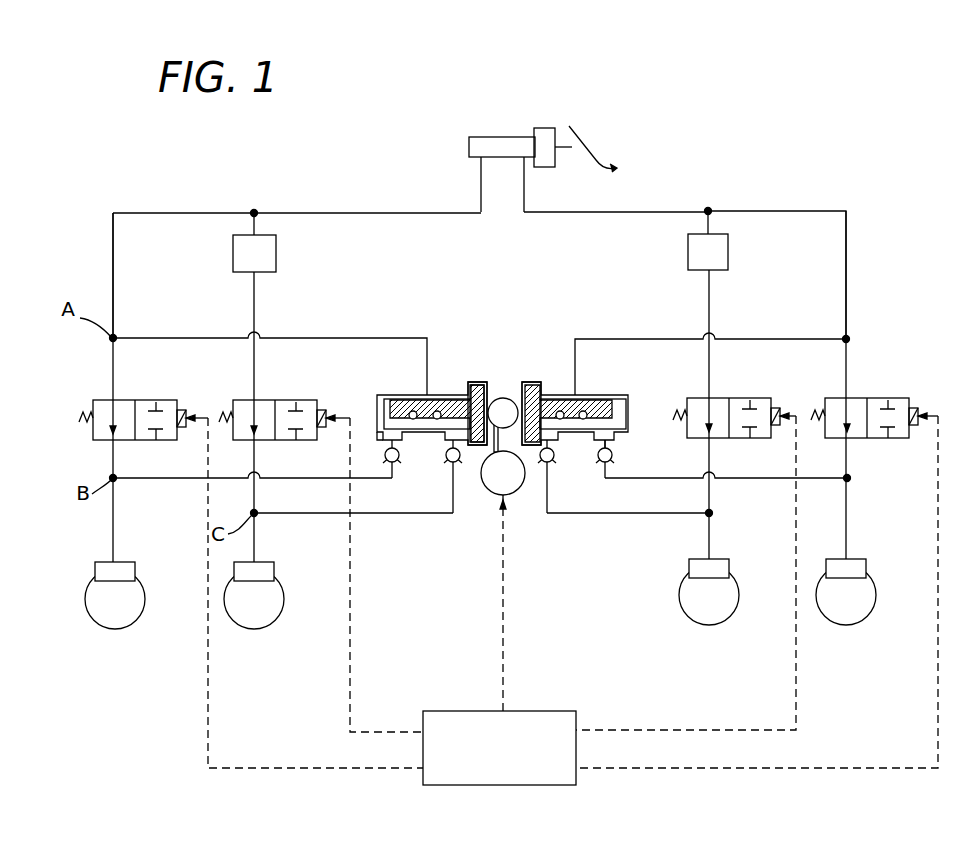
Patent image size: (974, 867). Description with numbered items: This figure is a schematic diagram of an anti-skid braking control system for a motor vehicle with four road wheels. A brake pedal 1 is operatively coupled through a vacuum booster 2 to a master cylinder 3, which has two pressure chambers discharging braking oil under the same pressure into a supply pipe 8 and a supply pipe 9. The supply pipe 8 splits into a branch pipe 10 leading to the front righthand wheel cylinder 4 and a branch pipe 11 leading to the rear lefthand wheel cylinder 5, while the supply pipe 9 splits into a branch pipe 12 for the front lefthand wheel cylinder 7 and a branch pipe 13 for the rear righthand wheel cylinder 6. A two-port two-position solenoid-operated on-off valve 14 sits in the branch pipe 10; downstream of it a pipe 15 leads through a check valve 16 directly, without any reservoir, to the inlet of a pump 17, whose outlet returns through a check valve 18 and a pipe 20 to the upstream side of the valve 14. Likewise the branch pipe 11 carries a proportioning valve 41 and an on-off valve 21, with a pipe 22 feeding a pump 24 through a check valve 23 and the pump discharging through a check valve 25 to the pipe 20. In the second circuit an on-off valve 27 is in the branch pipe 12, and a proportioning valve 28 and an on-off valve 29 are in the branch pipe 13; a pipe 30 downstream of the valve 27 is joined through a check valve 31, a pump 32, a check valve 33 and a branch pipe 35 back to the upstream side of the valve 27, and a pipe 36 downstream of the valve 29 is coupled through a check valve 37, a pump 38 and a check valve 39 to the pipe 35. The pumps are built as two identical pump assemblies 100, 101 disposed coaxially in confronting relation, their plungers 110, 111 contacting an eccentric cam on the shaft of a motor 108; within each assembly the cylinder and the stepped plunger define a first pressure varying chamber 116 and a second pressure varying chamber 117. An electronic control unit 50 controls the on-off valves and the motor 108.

The brake pedal 1 is at (583, 141).
The vacuum booster 2 is at (547, 128).
The master cylinder 3 is at (486, 143).
The wheel cylinder 4 is at (135, 568).
The wheel cylinder 5 is at (274, 568).
The wheel cylinder 6 is at (729, 565).
The wheel cylinder 7 is at (866, 565).
The supply pipe 8 is at (366, 213).
The supply pipe 9 is at (630, 211).
The branch pipe 10 is at (176, 213).
The branch pipe 11 is at (258, 222).
The branch pipe 12 is at (778, 211).
The branch pipe 13 is at (705, 222).
The solenoid-operated on-off valve 14 is at (100, 437).
The pipe 15 is at (163, 478).
The check valve 16 is at (400, 463).
The pump 17 is at (378, 405).
The check valve 18 is at (408, 402).
The pipe 20 is at (160, 338).
The solenoid-operated on-off valve 21 is at (285, 437).
The pipe 22 is at (410, 513).
The check valve 23 is at (458, 463).
The pump 24 is at (479, 378).
The check valve 25 is at (453, 400).
The solenoid-operated on-off valve 27 is at (855, 437).
The proportioning valve 28 is at (728, 251).
The solenoid-operated valve 29 is at (700, 435).
The pipe 30 is at (750, 478).
The check valve 31 is at (613, 458).
The pump 32 is at (627, 404).
The check valve 33 is at (597, 402).
The branch pipe 35 is at (770, 339).
The pipe 36 is at (620, 513).
The check valve 37 is at (557, 463).
The pump 38 is at (512, 386).
The check valve 39 is at (553, 400).
The proportioning valve 41 is at (236, 245).
The electronic control unit 50 is at (545, 720).
The pump assembly 100 is at (442, 396).
The pump assembly 101 is at (565, 394).
The motor 108 is at (518, 489).
The plunger 110 is at (446, 458).
The plunger 111 is at (597, 458).
The first pressure varying chamber 116 is at (373, 440).
The second pressure varying chamber 117 is at (474, 452).